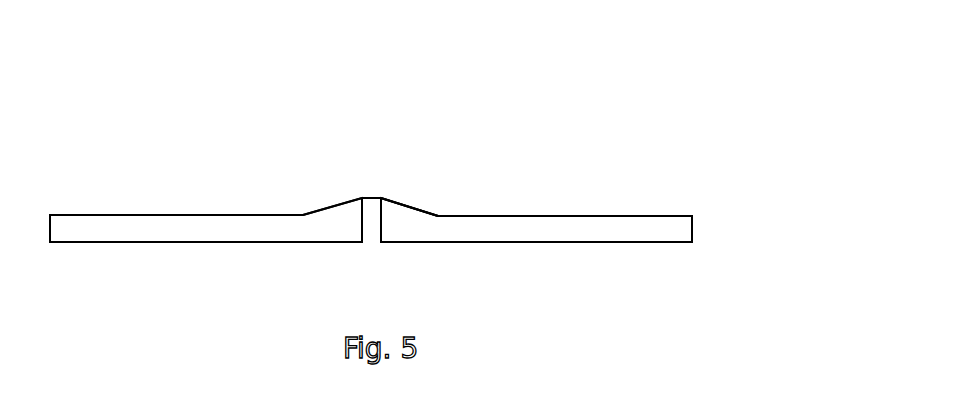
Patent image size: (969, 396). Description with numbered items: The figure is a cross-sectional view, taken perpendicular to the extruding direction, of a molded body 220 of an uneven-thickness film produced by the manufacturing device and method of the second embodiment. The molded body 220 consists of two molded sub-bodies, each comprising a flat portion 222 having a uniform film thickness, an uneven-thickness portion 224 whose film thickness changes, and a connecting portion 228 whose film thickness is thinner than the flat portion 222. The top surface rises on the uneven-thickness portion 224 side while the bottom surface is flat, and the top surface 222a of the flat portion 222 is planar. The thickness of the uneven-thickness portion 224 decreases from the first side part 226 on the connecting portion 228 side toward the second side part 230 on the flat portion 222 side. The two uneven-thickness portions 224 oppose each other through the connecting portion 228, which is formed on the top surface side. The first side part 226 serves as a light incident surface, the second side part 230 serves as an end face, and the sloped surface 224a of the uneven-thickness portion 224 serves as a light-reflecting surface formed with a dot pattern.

The molded body 220 is at (414, 175).
The flat portion 222 is at (543, 222).
The top surface of plate body 222a is at (627, 215).
The uneven-thickness portion 224 is at (398, 217).
The sloped surface 224a is at (418, 209).
The first side part 226 is at (380, 222).
The connecting portion 228 is at (366, 196).
The second side part 230 is at (692, 225).